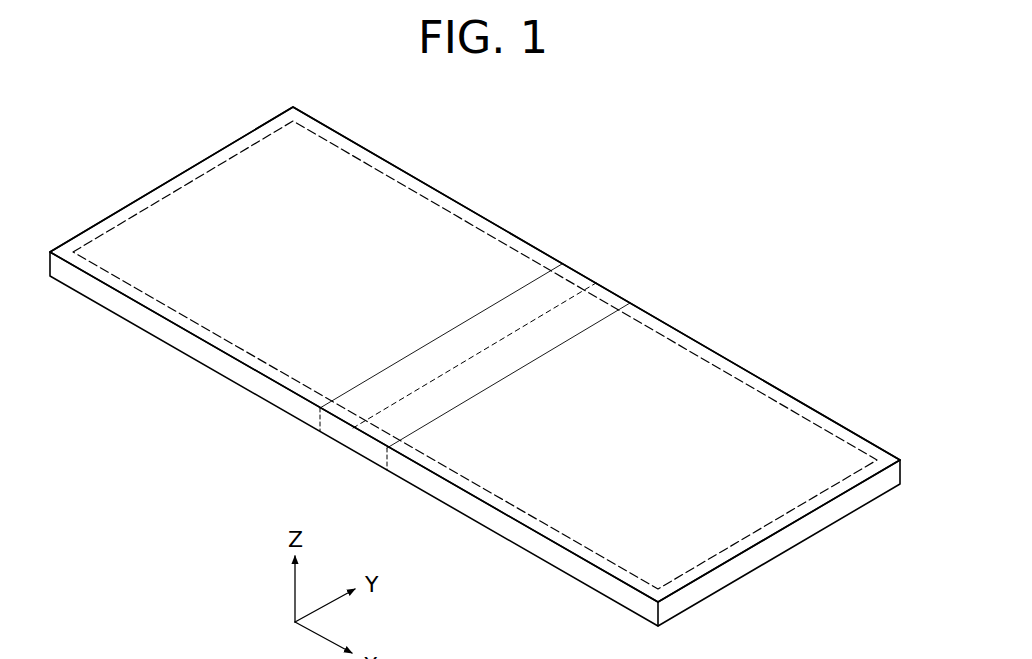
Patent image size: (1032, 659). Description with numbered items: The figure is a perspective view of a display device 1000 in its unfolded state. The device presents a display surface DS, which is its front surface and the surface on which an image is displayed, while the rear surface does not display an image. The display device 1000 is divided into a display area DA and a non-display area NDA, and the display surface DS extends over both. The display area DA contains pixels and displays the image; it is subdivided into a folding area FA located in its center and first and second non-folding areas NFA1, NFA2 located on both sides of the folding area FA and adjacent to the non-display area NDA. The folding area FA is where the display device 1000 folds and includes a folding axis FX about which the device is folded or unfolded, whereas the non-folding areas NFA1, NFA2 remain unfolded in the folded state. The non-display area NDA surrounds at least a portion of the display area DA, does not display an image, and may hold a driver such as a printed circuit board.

The display device 1000 is at (720, 188).
The display surface DS is at (137, 227).
The display area DA is at (847, 357).
The non-display area NDA is at (280, 378).
The first non-folding area NFA1 is at (571, 260).
The folding area FA is at (644, 301).
The second non-folding area NFA2 is at (899, 445).
The folding axis FX is at (353, 428).